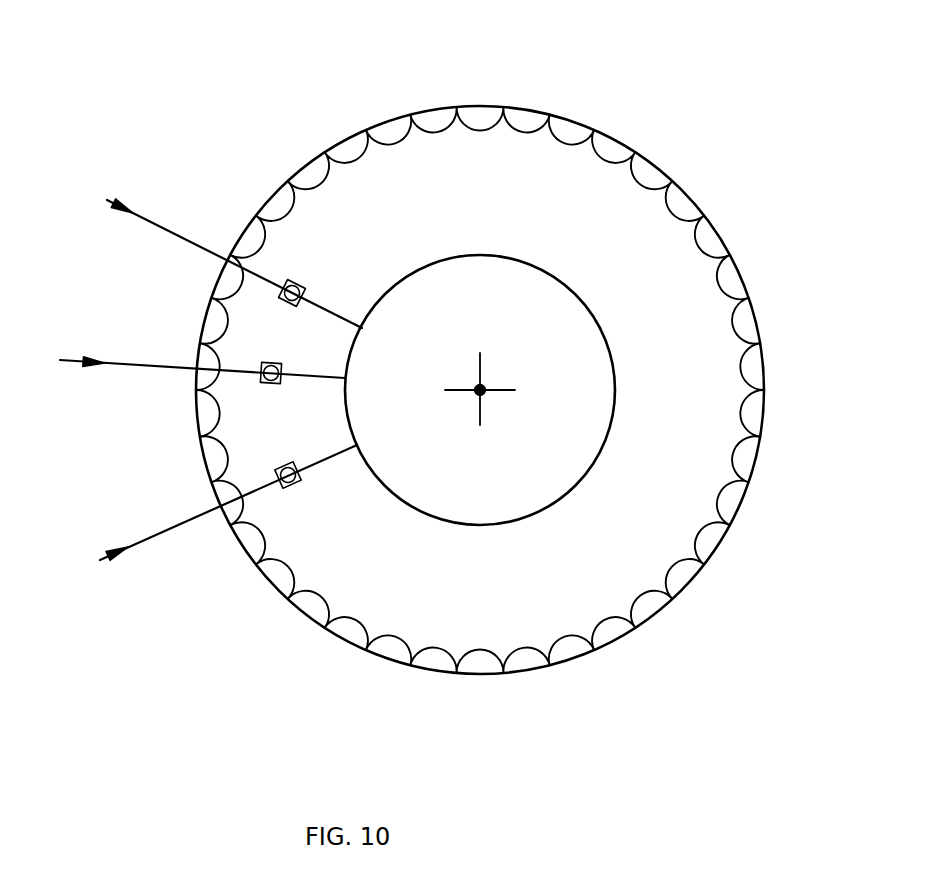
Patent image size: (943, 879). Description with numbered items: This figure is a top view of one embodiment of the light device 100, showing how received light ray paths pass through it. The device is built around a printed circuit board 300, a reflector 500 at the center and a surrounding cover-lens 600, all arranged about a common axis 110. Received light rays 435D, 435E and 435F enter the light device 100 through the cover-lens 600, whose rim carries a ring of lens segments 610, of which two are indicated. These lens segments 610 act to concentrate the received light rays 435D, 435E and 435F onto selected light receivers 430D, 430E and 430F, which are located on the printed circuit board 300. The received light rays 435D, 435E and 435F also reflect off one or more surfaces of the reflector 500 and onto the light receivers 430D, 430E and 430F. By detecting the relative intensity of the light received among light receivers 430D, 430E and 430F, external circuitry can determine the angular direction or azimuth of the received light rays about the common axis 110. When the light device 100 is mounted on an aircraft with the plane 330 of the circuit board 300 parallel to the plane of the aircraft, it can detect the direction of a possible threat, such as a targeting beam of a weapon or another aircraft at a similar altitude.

The light device 100 is at (278, 75).
The common axis 110 is at (490, 392).
The printed circuit board 300 is at (623, 580).
The plane of the circuit board 330 is at (500, 597).
The reflector 500 is at (540, 262).
The cover-lens 600 is at (527, 132).
The lens segments 610 is at (710, 238).
The light receiver 430D is at (266, 384).
The light receiver 430E is at (297, 283).
The light receiver 430F is at (290, 487).
The received light ray 435D is at (130, 367).
The received light ray 435E is at (162, 227).
The received light ray 435F is at (153, 532).